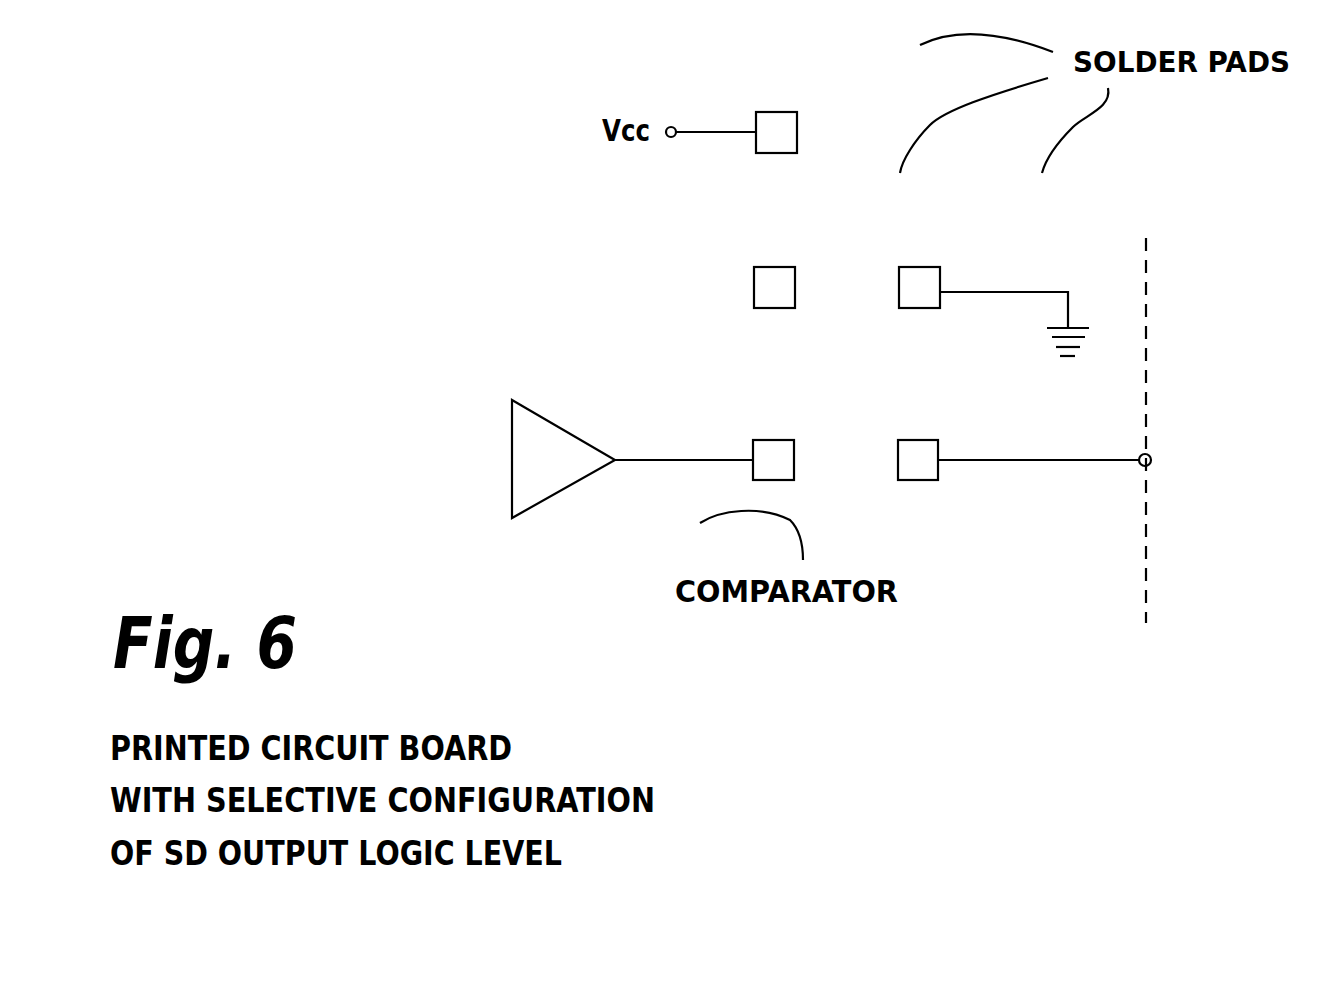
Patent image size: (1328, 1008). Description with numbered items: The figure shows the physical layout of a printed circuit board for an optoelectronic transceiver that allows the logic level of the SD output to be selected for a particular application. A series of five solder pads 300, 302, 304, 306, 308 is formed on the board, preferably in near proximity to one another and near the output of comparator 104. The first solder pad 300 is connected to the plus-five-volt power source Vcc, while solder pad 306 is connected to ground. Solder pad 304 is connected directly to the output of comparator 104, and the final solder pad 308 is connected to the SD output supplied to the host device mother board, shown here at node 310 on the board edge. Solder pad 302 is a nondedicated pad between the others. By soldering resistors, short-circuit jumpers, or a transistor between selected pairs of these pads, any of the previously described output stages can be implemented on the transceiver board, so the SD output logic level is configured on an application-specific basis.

The solder pad 300 is at (778, 111).
The solder pad 302 is at (777, 267).
The solder pad 304 is at (775, 440).
The solder pad 306 is at (920, 267).
The solder pad 308 is at (920, 440).
The SD output node 310 is at (1151, 457).
The comparator 104 is at (545, 498).